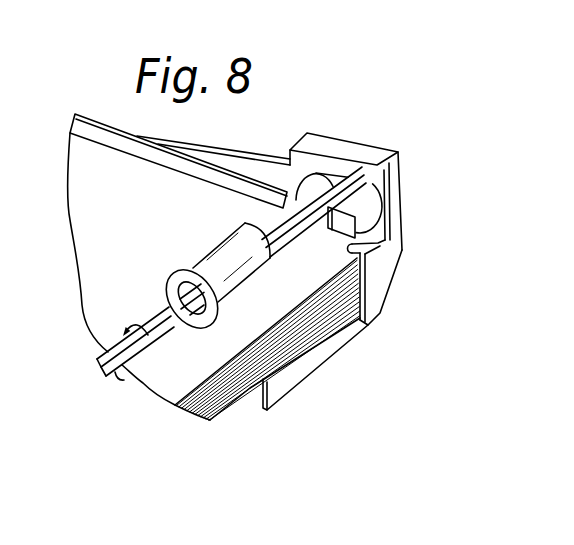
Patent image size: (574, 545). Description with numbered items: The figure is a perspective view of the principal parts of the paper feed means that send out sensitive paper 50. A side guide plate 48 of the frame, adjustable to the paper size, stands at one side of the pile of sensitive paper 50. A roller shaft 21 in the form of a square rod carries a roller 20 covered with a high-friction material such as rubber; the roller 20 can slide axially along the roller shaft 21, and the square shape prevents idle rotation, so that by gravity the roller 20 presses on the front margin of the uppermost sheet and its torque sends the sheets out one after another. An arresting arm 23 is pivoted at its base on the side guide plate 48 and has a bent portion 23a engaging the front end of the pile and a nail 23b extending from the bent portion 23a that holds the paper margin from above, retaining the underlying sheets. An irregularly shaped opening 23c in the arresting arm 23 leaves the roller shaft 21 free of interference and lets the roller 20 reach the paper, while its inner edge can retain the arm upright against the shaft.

The roller 20 is at (213, 249).
The roller shaft 21 is at (118, 367).
The arresting arm 23 is at (223, 158).
The bent portion 23a is at (387, 292).
The nail 23b is at (350, 249).
The opening 23c is at (373, 209).
The side guide plate 48 is at (173, 166).
The sensitive paper 50 is at (222, 400).